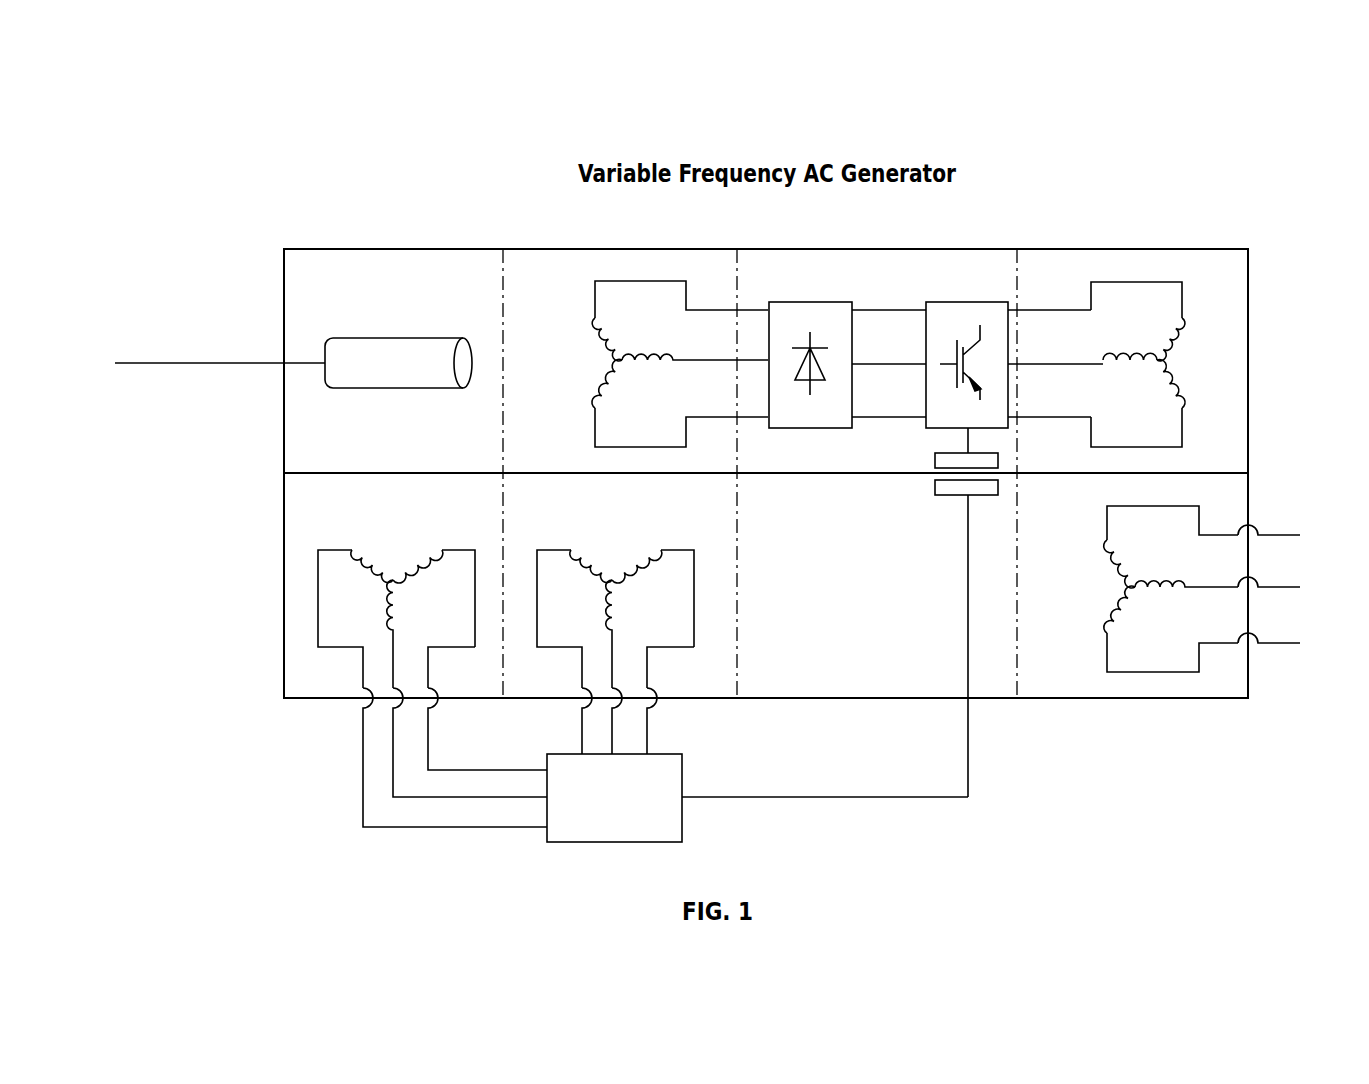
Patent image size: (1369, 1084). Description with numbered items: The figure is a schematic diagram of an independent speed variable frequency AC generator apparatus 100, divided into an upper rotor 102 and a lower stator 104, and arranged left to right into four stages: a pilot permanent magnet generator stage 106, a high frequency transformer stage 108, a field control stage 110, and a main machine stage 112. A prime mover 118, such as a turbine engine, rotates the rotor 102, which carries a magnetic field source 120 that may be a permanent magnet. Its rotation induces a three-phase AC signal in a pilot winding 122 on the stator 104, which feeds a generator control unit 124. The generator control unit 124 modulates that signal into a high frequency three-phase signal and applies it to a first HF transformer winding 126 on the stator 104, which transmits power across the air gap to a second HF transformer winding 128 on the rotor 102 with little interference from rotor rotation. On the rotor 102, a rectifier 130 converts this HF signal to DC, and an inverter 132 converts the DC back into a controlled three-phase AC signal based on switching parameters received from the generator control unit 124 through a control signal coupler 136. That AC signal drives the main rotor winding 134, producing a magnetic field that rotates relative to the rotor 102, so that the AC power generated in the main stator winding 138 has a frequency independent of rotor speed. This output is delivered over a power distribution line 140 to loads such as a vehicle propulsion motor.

The independent speed variable frequency AC generator apparatus 100 is at (172, 124).
The rotor 102 is at (284, 290).
The stator 104 is at (284, 523).
The pilot permanent magnet generator (PMG) stage 106 is at (310, 248).
The high frequency (HF) transformer stage 108 is at (522, 248).
The field control stage 110 is at (767, 248).
The main machine stage 112 is at (1242, 248).
The prime mover 118 is at (160, 362).
The magnetic field source 120 is at (366, 338).
The pilot winding 122 is at (380, 560).
The generator control unit 124 is at (662, 754).
The first HF transformer winding 126 is at (599, 560).
The second HF transformer winding 128 is at (601, 393).
The rectifier 130 is at (799, 302).
The inverter 132 is at (956, 302).
The main rotor winding 134 is at (1152, 385).
The control signal coupler 136 is at (990, 496).
The main stator winding 138 is at (1113, 625).
The power distribution line 140 is at (1285, 534).